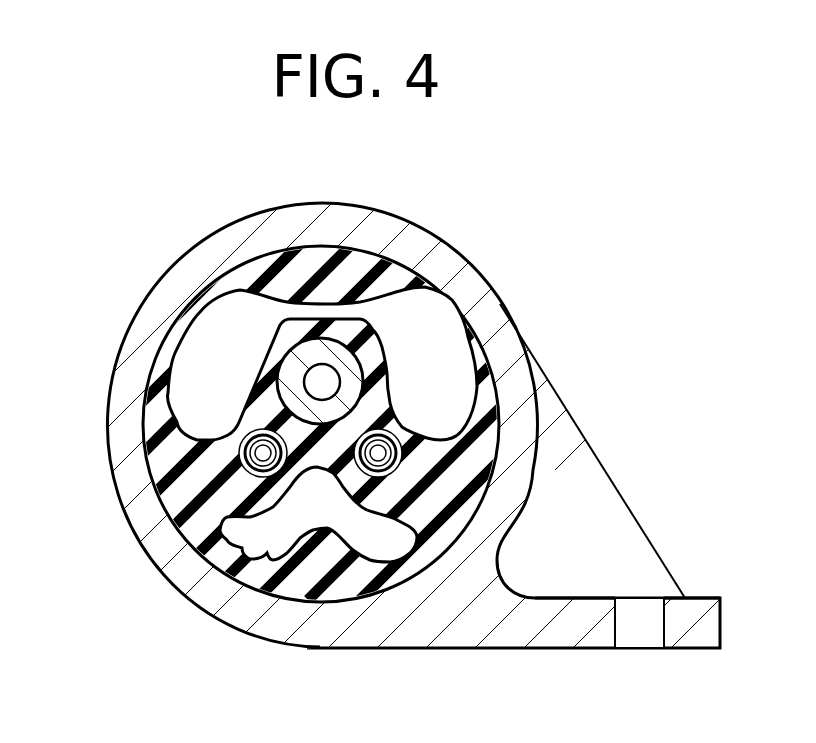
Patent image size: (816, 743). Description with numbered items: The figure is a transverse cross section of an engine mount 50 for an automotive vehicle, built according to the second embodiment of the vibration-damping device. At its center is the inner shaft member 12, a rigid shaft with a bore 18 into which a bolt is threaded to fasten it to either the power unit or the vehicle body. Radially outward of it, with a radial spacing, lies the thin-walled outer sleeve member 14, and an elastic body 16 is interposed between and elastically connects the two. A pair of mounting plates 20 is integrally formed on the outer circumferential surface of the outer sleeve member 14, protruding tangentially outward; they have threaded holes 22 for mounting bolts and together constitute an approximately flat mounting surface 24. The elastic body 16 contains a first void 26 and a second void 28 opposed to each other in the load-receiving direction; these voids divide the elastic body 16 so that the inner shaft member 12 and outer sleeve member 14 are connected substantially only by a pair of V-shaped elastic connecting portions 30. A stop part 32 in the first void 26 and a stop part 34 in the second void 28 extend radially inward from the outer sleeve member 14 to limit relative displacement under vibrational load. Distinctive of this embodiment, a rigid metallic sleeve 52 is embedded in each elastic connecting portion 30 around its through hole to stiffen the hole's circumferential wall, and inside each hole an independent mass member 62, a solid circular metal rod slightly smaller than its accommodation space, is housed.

The inner shaft member 12 is at (348, 390).
The outer sleeve member 14 is at (287, 214).
The elastic body 16 is at (139, 412).
The bore 18 is at (313, 375).
The mounting plate 20 is at (593, 630).
The threaded hole 22 is at (663, 630).
The mounting surface 24 is at (673, 650).
The first void 26 is at (232, 556).
The second void 28 is at (416, 296).
The elastic connecting portion 30 is at (238, 428).
The stop part 32 is at (316, 533).
The stop part 34 is at (333, 297).
The engine mount 50 is at (525, 196).
The metallic sleeve 52 is at (240, 453).
The independent mass member 62 is at (218, 537).